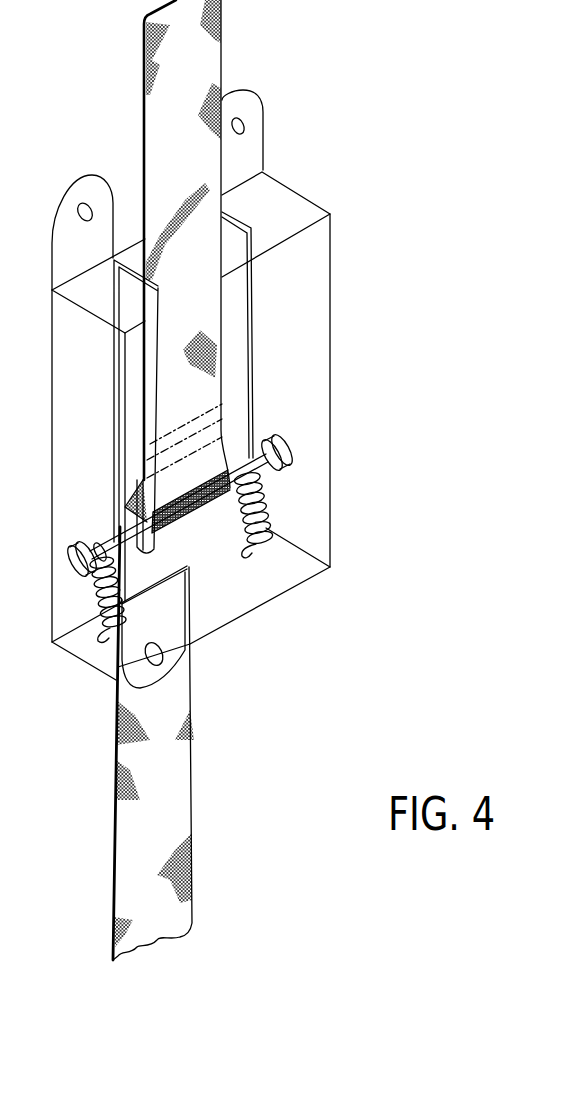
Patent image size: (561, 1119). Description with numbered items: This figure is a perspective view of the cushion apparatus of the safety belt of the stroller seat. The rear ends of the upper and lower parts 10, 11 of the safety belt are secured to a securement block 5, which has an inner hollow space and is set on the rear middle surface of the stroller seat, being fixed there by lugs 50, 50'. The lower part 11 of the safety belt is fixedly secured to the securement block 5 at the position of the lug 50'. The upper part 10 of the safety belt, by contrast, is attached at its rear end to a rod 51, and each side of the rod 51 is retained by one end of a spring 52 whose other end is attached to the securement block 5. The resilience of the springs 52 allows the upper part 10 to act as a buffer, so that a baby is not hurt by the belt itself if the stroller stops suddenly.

The securement block 5 is at (302, 293).
The upper part of the safety belt 10 is at (222, 16).
The lower part of the safety belt 11 is at (191, 812).
The lug 50 is at (164, 190).
The lug 50' is at (182, 635).
The rod 51 is at (266, 440).
The spring 52 is at (267, 497).